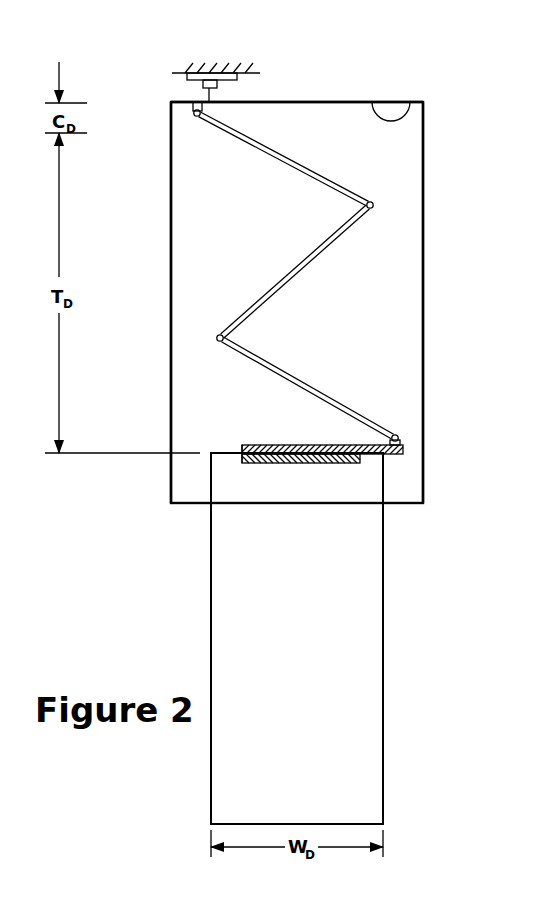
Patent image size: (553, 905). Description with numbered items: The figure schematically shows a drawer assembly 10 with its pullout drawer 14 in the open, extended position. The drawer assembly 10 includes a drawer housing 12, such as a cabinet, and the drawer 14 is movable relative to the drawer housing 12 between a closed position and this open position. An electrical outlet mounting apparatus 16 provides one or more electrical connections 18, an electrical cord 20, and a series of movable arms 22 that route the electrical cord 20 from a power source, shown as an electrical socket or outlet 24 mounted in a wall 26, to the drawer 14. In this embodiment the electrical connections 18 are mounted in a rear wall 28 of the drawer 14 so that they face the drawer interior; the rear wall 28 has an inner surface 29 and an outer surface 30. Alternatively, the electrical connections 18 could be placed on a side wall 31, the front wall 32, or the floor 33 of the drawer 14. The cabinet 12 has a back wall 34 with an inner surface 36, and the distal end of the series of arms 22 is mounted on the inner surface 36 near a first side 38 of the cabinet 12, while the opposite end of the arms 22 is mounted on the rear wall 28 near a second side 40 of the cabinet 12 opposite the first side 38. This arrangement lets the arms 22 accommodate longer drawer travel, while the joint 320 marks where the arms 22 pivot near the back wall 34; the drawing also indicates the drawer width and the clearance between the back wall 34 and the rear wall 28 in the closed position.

The drawer assembly 10 is at (477, 107).
The drawer housing 12 is at (423, 194).
The pullout drawer 14 is at (390, 625).
The electrical outlet mounting apparatus 16 is at (363, 392).
The electrical connections 18 is at (292, 457).
The electrical cord 20 is at (198, 95).
The series of movable arms 22 is at (271, 243).
The electrical socket or outlet 24 is at (205, 73).
The wall 26 is at (245, 74).
The rear wall 28 is at (220, 449).
The inner surface 29 is at (367, 456).
The outer surface 30 is at (236, 452).
The side wall 31 is at (211, 575).
The front wall 32 is at (243, 824).
The floor 33 is at (283, 724).
The back wall 34 is at (349, 100).
The inner surface 36 is at (391, 104).
The first side 38 is at (171, 222).
The second side 40 is at (423, 411).
The pivot joint 320 is at (192, 114).